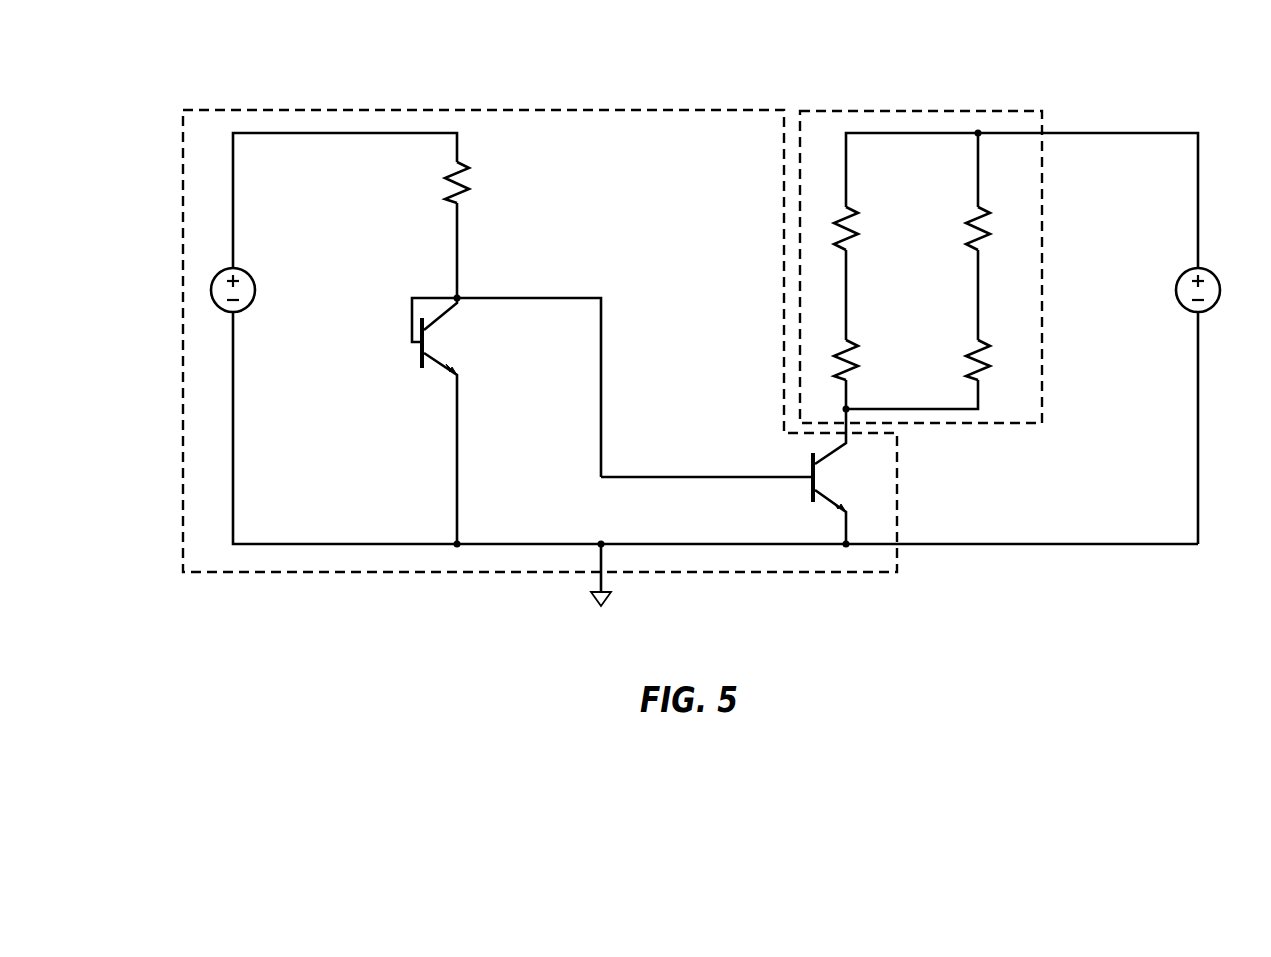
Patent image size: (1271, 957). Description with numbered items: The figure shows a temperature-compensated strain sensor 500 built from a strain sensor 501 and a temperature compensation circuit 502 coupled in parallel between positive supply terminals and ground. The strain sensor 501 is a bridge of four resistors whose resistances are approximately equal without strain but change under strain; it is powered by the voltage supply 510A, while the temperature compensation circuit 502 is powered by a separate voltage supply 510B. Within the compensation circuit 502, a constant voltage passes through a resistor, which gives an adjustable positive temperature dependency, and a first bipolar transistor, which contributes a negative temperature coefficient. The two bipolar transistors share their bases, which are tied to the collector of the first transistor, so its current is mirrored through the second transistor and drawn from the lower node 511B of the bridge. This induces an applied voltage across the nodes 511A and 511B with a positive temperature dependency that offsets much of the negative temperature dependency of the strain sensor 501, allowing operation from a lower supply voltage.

The temperature-compensated strain sensor 500 is at (703, 23).
The strain sensor 501 is at (909, 110).
The temperature compensation circuit 502 is at (470, 110).
The voltage supply 510A is at (1176, 291).
The voltage supply 510B is at (255, 290).
The node 511A is at (976, 135).
The node 511B is at (849, 407).